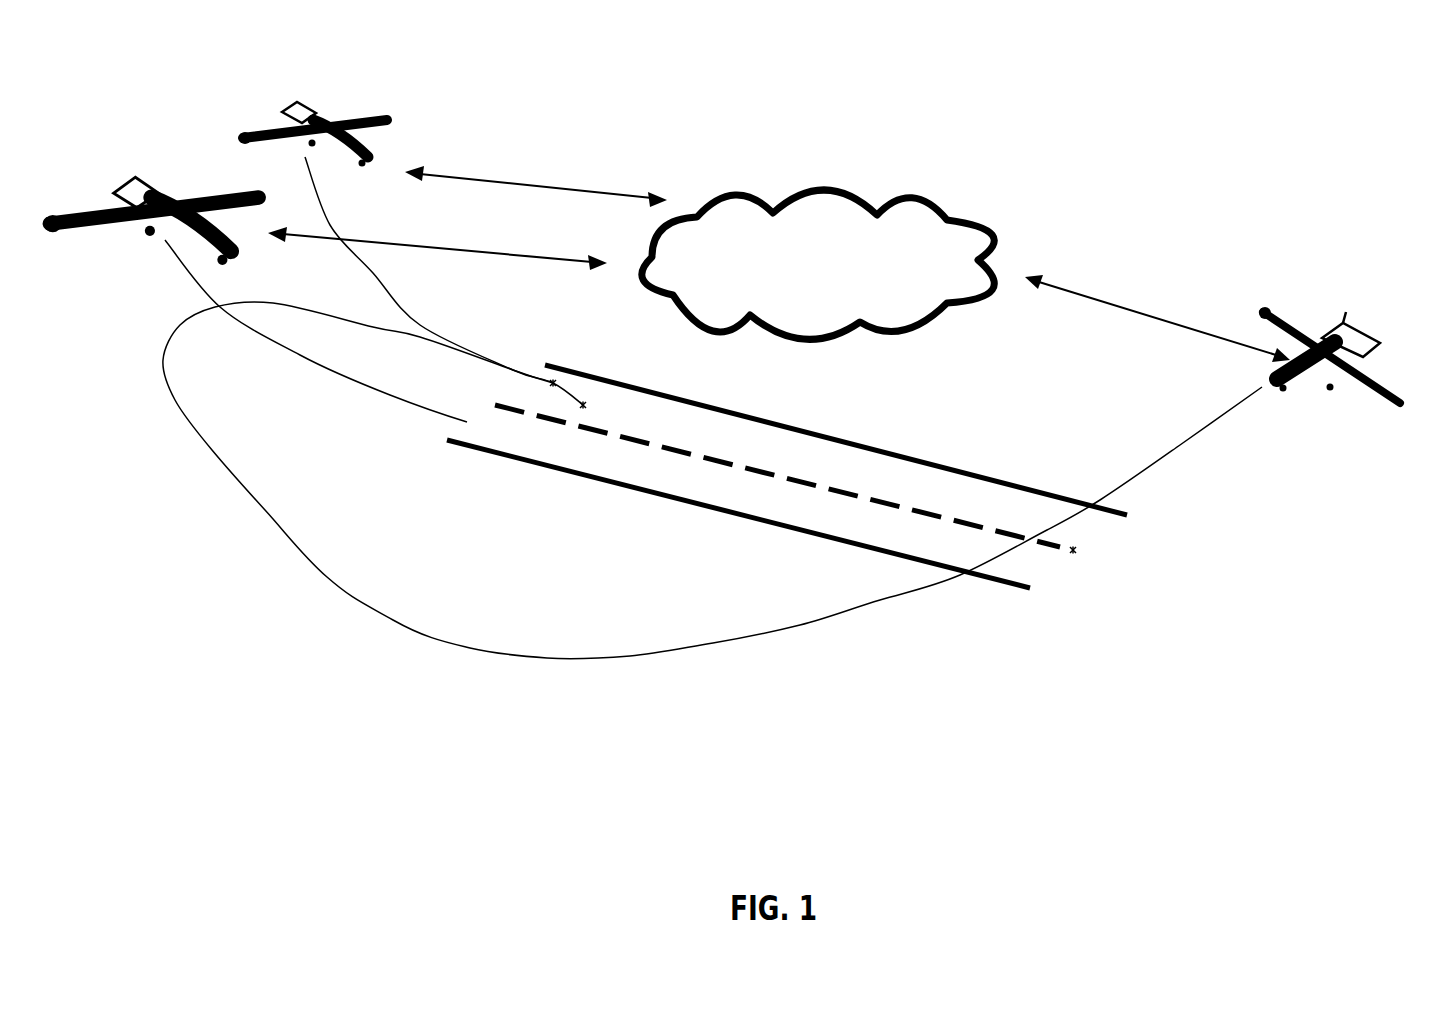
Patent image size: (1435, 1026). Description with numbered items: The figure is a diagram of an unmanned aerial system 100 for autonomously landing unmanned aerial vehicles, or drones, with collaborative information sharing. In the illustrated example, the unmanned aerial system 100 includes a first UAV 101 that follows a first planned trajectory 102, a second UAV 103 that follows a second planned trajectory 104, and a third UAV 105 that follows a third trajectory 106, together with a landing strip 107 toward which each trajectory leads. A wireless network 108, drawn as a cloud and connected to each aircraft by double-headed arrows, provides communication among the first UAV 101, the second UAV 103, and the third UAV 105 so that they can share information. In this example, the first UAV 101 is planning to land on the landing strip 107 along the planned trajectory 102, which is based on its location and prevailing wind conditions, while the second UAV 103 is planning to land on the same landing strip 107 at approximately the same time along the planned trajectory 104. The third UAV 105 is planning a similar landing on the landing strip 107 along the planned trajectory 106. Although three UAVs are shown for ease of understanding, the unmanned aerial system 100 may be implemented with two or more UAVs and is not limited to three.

The unmanned aerial system 100 is at (1342, 58).
The first UAV 101 is at (1290, 323).
The first planned trajectory 102 is at (1210, 425).
The second UAV 103 is at (337, 117).
The second planned trajectory 104 is at (387, 295).
The third UAV 105 is at (187, 200).
The third trajectory 106 is at (387, 390).
The landing strip 107 is at (850, 438).
The wireless network 108 is at (960, 215).